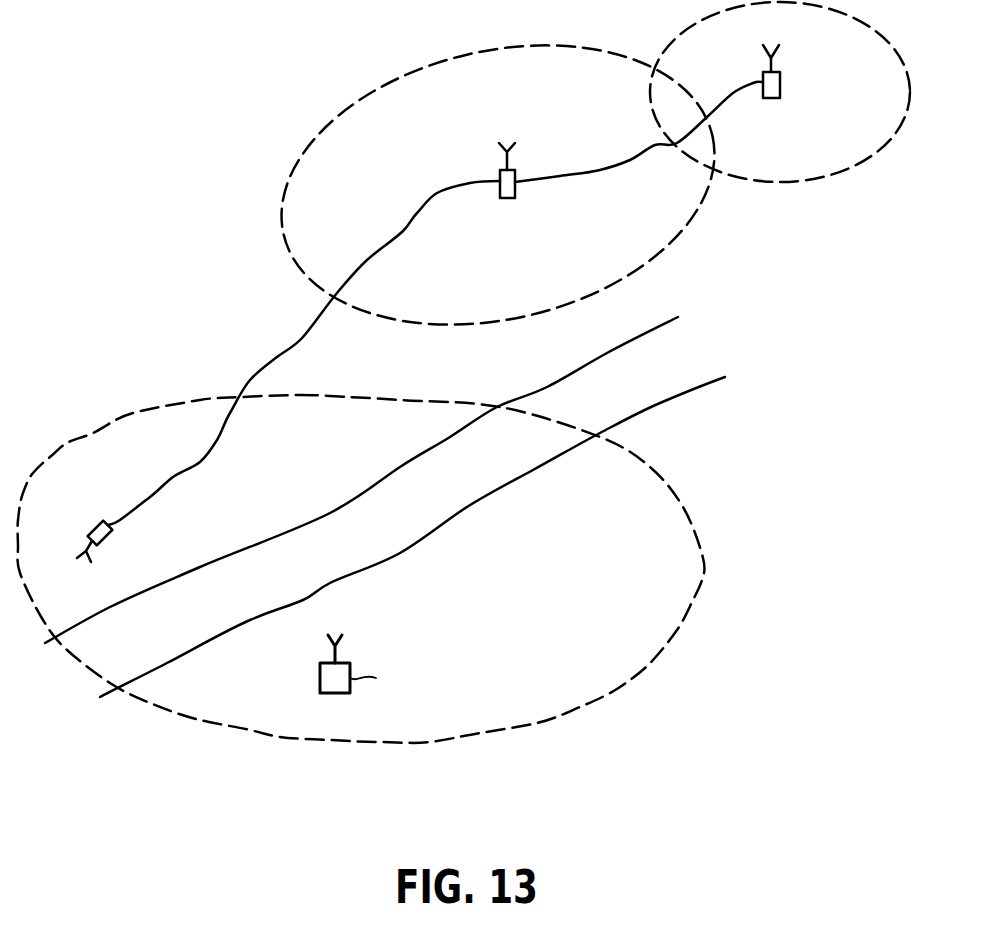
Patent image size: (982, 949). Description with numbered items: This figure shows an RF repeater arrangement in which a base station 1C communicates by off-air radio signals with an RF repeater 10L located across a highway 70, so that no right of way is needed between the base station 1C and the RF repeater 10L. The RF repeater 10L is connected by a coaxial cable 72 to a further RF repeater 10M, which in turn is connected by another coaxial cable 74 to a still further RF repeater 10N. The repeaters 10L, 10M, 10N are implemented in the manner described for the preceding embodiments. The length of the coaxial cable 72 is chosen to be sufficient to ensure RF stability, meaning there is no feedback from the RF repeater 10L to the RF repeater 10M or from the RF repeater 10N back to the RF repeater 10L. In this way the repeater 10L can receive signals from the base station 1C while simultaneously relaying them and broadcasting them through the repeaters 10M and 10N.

The RF repeater 10L is at (110, 533).
The further RF repeater 10M is at (507, 198).
The still further RF repeater 10N is at (771, 98).
The base station 1C is at (320, 678).
The highway 70 is at (277, 588).
The coaxial cable 72 is at (302, 335).
The travel path segment 74 is at (617, 170).